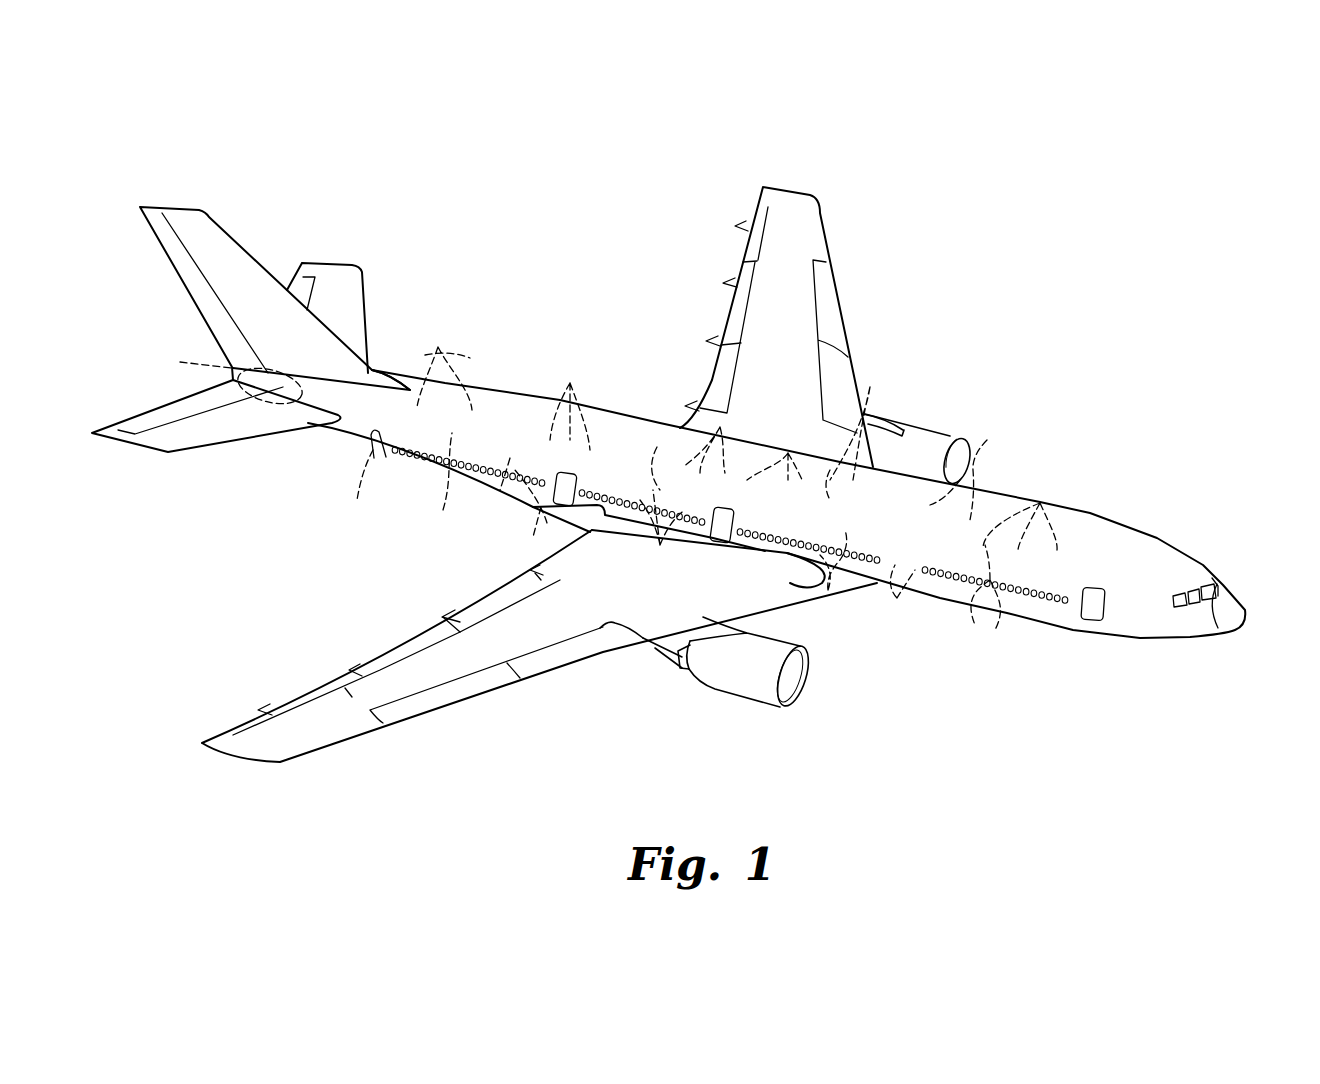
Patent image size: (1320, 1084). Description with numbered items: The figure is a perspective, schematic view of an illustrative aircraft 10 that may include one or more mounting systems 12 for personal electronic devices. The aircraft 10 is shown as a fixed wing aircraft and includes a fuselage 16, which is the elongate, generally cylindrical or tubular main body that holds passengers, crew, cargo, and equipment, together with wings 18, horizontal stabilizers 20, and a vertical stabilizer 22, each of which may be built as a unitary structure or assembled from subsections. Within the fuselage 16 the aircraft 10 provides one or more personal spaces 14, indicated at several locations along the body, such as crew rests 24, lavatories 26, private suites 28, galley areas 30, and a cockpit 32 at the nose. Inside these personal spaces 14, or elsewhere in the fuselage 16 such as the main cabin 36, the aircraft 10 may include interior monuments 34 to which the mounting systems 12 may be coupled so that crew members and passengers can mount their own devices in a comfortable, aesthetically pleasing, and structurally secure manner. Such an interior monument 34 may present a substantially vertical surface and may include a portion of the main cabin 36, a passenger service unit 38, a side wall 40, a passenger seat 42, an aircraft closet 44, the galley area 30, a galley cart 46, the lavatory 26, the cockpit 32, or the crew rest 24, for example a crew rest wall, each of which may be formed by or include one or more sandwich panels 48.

The aircraft 10 is at (1155, 248).
The mounting system 12 is at (570, 383).
The personal space 14 is at (430, 290).
The fuselage 16 is at (608, 428).
The wings 18 is at (307, 740).
The horizontal stabilizers 20 is at (347, 277).
The vertical stabilizer 22 is at (195, 225).
The crew rest 24 is at (995, 432).
The lavatory 26 is at (443, 510).
The private suite 28 is at (657, 447).
The galley area 30 is at (830, 470).
The cockpit 32 is at (1192, 585).
The interior monument 34 is at (870, 387).
The main cabin 36 is at (527, 440).
The passenger service unit 38 is at (660, 545).
The side wall 40 is at (547, 523).
The passenger seat 42 is at (788, 453).
The aircraft closet 44 is at (1040, 503).
The galley cart 46 is at (830, 622).
The sandwich panel 48 is at (720, 427).